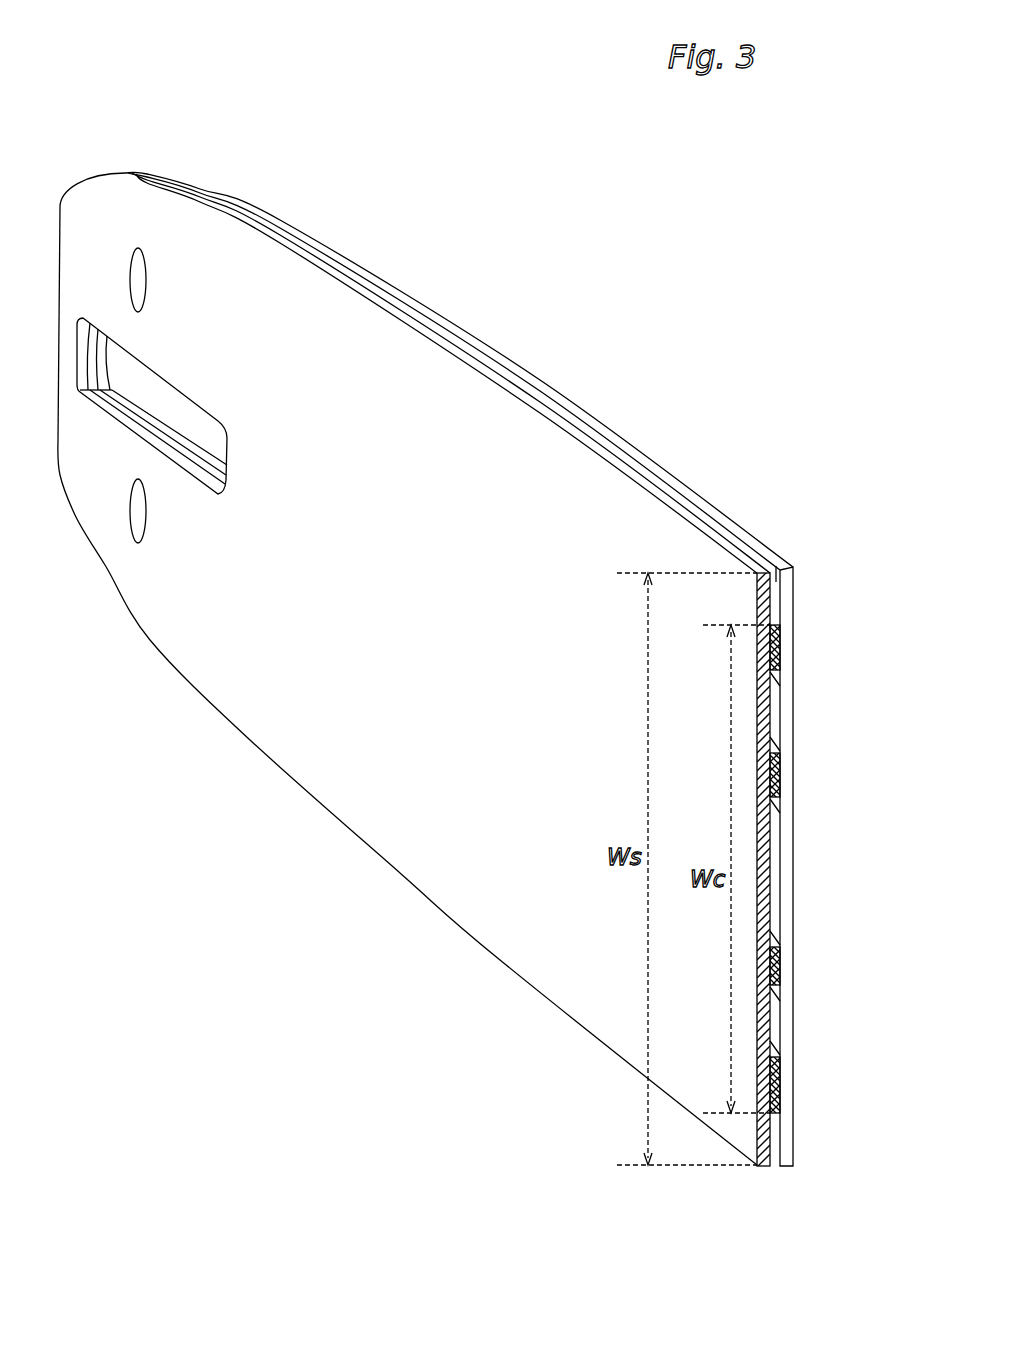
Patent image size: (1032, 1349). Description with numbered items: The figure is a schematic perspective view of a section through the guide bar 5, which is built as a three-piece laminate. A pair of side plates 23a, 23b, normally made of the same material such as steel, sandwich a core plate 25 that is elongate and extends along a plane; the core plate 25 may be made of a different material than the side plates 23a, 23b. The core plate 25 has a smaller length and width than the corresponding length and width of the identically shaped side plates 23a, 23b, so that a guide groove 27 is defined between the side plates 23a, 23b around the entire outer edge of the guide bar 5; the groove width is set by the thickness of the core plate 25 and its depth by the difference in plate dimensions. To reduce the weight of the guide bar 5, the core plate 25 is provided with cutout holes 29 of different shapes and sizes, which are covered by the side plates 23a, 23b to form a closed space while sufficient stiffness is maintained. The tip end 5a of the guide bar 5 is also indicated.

The guide bar 5 is at (574, 337).
The tip end of guide bar 5a is at (138, 143).
The side plate 23a is at (765, 1168).
The side plate 23b is at (789, 1168).
The core plate 25 is at (780, 637).
The guide groove 27 is at (777, 566).
The cutout holes 29 is at (777, 712).